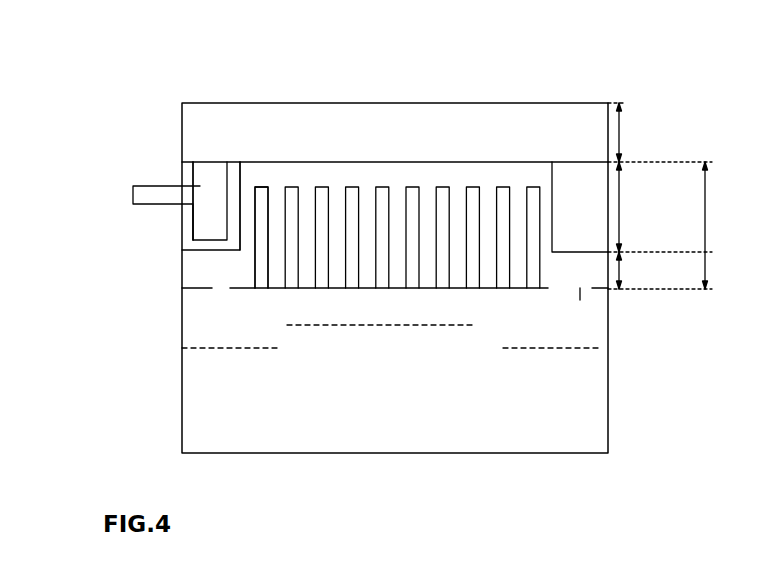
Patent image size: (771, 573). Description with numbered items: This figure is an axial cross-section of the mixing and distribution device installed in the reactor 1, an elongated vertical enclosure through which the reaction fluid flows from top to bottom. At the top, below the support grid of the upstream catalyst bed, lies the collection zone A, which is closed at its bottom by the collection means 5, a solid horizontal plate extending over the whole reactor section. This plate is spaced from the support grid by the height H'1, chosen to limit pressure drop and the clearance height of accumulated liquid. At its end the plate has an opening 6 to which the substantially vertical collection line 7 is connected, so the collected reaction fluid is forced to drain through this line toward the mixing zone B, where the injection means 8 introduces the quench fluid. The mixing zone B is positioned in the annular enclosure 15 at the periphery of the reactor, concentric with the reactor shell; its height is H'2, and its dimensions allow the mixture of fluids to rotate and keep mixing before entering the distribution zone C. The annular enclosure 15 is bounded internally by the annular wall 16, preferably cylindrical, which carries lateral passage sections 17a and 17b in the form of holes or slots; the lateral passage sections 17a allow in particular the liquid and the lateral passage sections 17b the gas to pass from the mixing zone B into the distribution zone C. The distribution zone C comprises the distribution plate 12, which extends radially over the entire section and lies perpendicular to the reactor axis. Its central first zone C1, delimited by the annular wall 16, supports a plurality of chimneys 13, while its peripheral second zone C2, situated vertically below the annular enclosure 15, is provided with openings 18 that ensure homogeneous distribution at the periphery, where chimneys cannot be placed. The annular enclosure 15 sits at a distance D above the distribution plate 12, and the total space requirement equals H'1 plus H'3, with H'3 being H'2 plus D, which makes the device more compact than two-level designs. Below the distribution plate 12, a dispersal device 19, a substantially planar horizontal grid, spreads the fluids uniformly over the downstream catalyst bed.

The reactor 1 is at (178, 332).
The collection means 5 is at (513, 160).
The opening 6 is at (213, 156).
The collection line 7 is at (200, 180).
The injection means 8 is at (165, 200).
The distribution plate 12 is at (548, 290).
The chimneys 13 is at (407, 240).
The annular enclosure 15 is at (210, 250).
The annular wall 16 is at (557, 197).
The lateral passage section 17a is at (250, 242).
The lateral passage section 17b is at (238, 183).
The openings 18 is at (580, 290).
The dispersal device 19 is at (527, 348).
The collection zone A is at (395, 129).
The mixing zone B is at (189, 228).
The distribution zone C is at (373, 170).
The first zone C1 is at (430, 297).
The second zone C2 is at (239, 298).
The height H'1 is at (638, 132).
The height H'2 is at (660, 207).
The height H'3 is at (726, 225).
The distance D is at (660, 271).